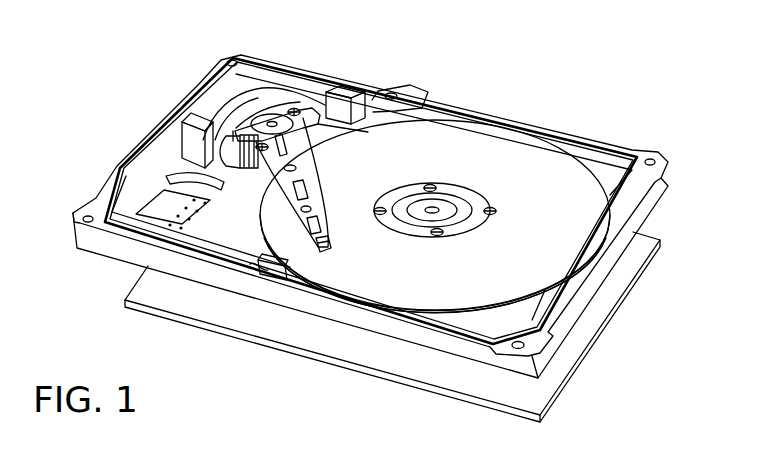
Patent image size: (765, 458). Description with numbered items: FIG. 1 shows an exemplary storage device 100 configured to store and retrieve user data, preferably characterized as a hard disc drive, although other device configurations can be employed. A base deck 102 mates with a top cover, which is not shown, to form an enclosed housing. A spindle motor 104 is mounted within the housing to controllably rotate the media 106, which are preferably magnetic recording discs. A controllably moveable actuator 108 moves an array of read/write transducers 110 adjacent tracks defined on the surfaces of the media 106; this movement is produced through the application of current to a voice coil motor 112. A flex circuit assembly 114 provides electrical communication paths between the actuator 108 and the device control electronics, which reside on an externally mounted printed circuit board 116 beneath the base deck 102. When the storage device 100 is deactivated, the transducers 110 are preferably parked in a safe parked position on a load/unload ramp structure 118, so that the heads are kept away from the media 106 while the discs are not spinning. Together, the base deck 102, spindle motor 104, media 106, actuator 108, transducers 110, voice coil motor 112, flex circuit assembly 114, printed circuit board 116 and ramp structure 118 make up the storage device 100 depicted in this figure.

The storage device 100 is at (510, 68).
The base deck 102 is at (585, 287).
The spindle motor 104 is at (440, 205).
The media 106 is at (457, 314).
The actuator 108 is at (318, 190).
The read/write transducers 110 is at (330, 247).
The voice coil motor 112 is at (257, 90).
The flex circuit assembly 114 is at (178, 168).
The printed circuit board 116 is at (510, 418).
The load/unload ramp structure 118 is at (277, 274).